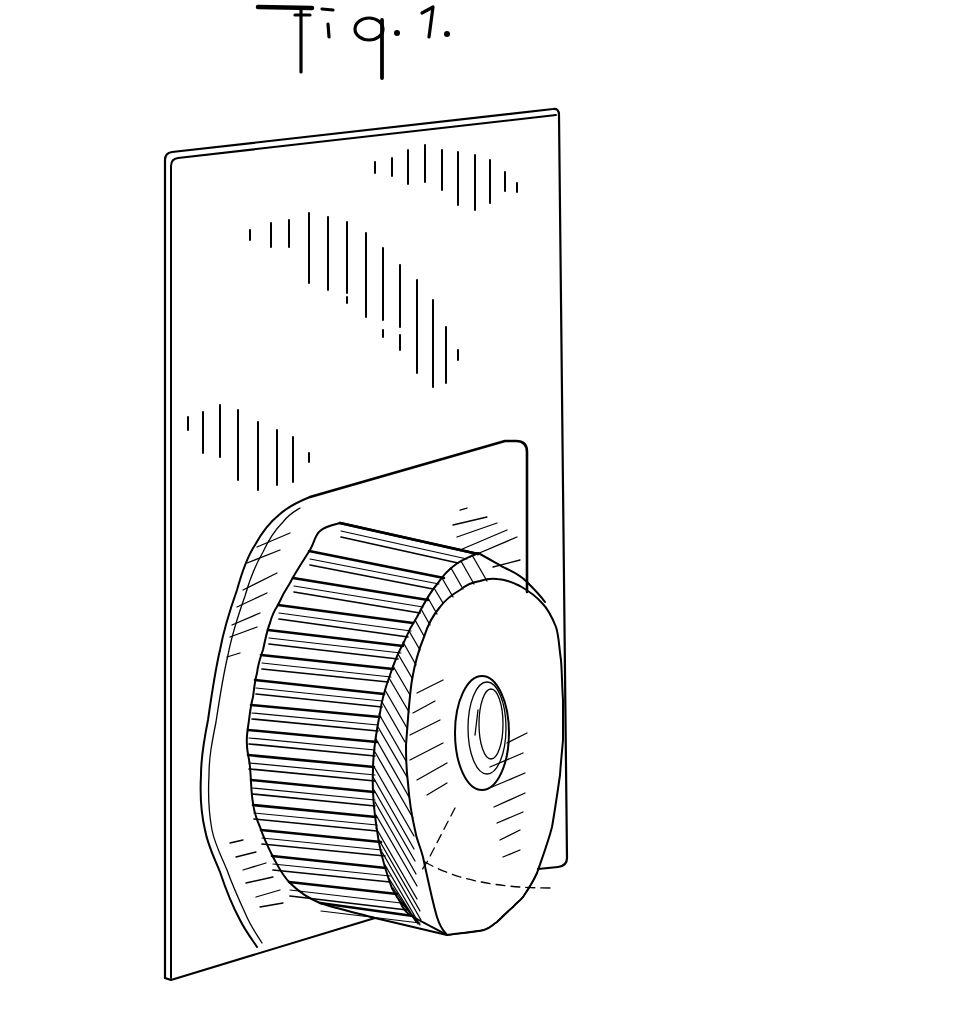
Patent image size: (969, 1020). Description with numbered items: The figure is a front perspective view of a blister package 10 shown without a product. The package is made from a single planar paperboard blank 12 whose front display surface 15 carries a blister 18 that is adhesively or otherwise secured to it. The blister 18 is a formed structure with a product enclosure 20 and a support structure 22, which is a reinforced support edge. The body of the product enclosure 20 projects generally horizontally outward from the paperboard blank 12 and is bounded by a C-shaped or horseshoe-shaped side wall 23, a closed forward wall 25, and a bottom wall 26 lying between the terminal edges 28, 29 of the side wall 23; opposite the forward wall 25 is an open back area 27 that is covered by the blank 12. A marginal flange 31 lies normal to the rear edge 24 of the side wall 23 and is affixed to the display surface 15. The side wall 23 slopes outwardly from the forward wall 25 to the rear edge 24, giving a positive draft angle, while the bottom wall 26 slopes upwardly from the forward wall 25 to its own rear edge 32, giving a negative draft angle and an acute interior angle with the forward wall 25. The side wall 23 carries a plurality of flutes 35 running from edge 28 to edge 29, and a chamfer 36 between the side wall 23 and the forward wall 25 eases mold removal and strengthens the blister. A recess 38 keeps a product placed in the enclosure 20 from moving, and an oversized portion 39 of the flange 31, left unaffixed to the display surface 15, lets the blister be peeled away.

The blister package 10 is at (128, 166).
The paperboard blank 12 is at (313, 152).
The front display surface 15 is at (362, 371).
The blister pack structure 18 is at (545, 907).
The product enclosure 20 is at (532, 822).
The support structure 22 is at (510, 913).
The C-shaped side wall 23 is at (381, 525).
The rear edge 24 is at (323, 537).
The forward wall 25 is at (524, 666).
The bottom wall 26 is at (463, 912).
The open back area 27 is at (540, 637).
The terminal edge 28 is at (385, 925).
The terminal edge 29 is at (511, 884).
The marginal flange 31 is at (218, 775).
The rear edge of bottom wall 32 is at (434, 838).
The flutes 35 is at (232, 637).
The chamfer 36 is at (477, 640).
The recess 38 is at (500, 713).
The oversized portion 39 is at (468, 460).